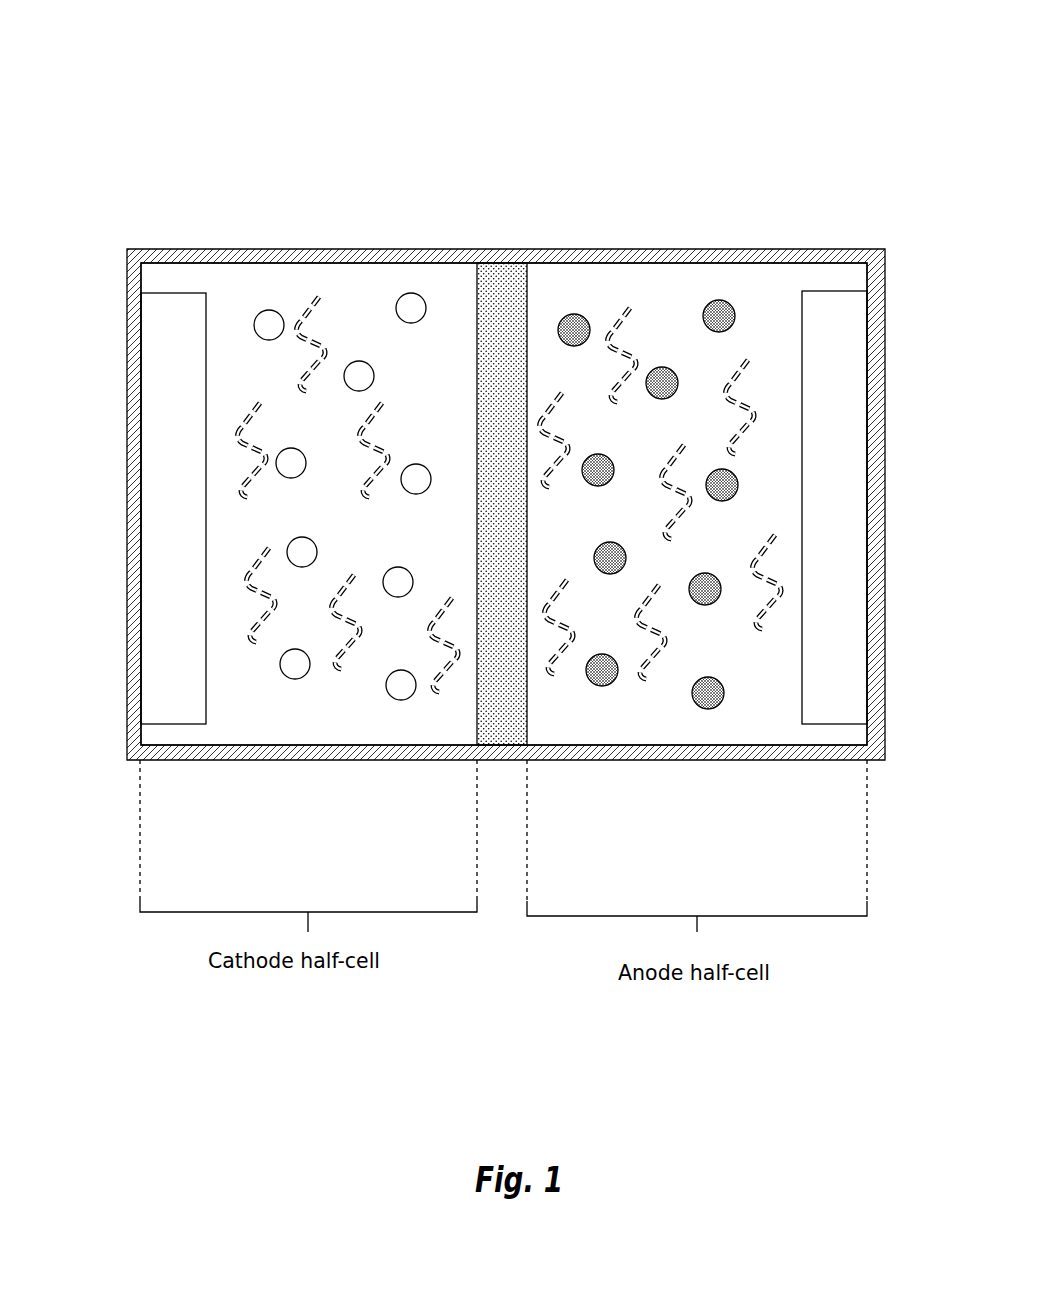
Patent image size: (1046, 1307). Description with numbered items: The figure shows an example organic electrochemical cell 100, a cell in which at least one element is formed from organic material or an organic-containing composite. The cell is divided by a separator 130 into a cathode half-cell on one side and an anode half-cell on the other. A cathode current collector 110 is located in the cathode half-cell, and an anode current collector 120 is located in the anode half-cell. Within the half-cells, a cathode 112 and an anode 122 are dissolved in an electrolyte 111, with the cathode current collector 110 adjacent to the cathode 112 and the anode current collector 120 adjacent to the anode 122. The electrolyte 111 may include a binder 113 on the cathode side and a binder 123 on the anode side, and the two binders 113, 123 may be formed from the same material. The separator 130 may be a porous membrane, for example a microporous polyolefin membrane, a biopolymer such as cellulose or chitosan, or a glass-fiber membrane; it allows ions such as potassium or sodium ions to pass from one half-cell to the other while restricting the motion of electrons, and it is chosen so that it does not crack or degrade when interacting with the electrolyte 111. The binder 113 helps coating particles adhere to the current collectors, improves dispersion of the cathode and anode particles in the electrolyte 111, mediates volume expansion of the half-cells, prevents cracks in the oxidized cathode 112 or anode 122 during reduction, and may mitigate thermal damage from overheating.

The organic electrochemical cell 100 is at (527, 31).
The cathode current collector 110 is at (155, 446).
The electrolyte 111 is at (277, 718).
The cathode 112 is at (410, 312).
The binder 113 is at (365, 442).
The anode current collector 120 is at (850, 474).
The anode 122 is at (718, 316).
The binder 123 is at (728, 402).
The separator 130 is at (498, 278).